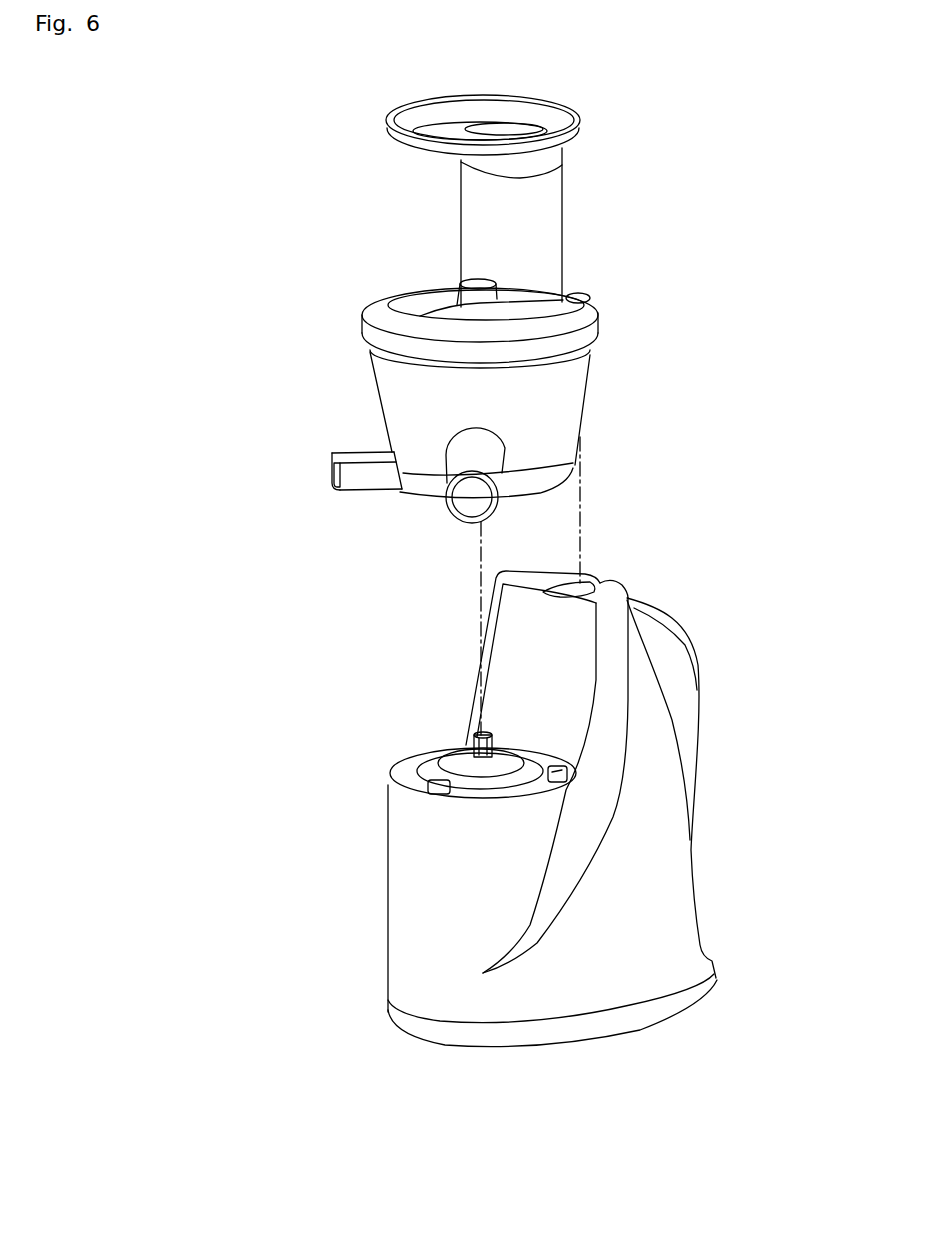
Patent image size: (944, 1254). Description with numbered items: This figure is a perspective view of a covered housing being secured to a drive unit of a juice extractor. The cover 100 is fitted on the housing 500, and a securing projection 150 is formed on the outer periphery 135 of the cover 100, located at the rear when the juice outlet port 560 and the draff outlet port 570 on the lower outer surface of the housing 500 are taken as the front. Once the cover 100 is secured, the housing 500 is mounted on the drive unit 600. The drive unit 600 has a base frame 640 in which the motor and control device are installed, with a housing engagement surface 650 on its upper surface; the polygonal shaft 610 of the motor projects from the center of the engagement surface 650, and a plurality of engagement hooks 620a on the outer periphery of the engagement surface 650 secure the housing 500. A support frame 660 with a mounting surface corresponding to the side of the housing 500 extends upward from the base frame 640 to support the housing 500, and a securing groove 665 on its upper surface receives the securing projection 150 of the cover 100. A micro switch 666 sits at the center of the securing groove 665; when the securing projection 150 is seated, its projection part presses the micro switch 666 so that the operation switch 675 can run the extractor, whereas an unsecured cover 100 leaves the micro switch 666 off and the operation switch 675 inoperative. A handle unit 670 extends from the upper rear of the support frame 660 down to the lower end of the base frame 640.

The cover 100 is at (360, 292).
The outer periphery 135 is at (600, 336).
The securing projection 150 is at (588, 297).
The housing 500 is at (355, 385).
The juice outlet port 560 is at (446, 472).
The draff outlet port 570 is at (357, 482).
The drive unit 600 is at (372, 1030).
The polygonal shaft 610 is at (462, 760).
The engagement hooks 620a is at (425, 786).
The base frame 640 is at (423, 960).
The housing engagement surface 650 is at (478, 798).
The support frame 660 is at (508, 668).
The securing groove 665 is at (578, 587).
The micro switch 666 is at (600, 581).
The handle unit 670 is at (682, 671).
The operation switch 675 is at (660, 610).